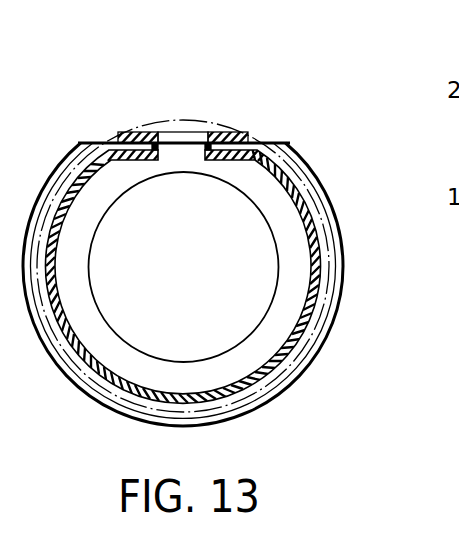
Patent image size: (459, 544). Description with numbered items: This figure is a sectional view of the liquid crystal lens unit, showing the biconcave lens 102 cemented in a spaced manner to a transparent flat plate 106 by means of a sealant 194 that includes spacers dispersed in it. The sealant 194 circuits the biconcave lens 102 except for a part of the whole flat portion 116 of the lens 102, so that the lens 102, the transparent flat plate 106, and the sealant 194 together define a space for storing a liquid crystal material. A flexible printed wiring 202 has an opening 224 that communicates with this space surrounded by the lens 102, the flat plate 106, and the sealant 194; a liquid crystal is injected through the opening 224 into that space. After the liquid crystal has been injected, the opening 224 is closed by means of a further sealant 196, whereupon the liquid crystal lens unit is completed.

The biconcave lens 102 is at (320, 172).
The transparent flat plate 106 is at (297, 368).
The flat portion 116 is at (263, 143).
The sealant 194 is at (316, 302).
The sealant 196 is at (206, 117).
The flexible printed wiring 202 is at (233, 132).
The opening 224 is at (174, 132).